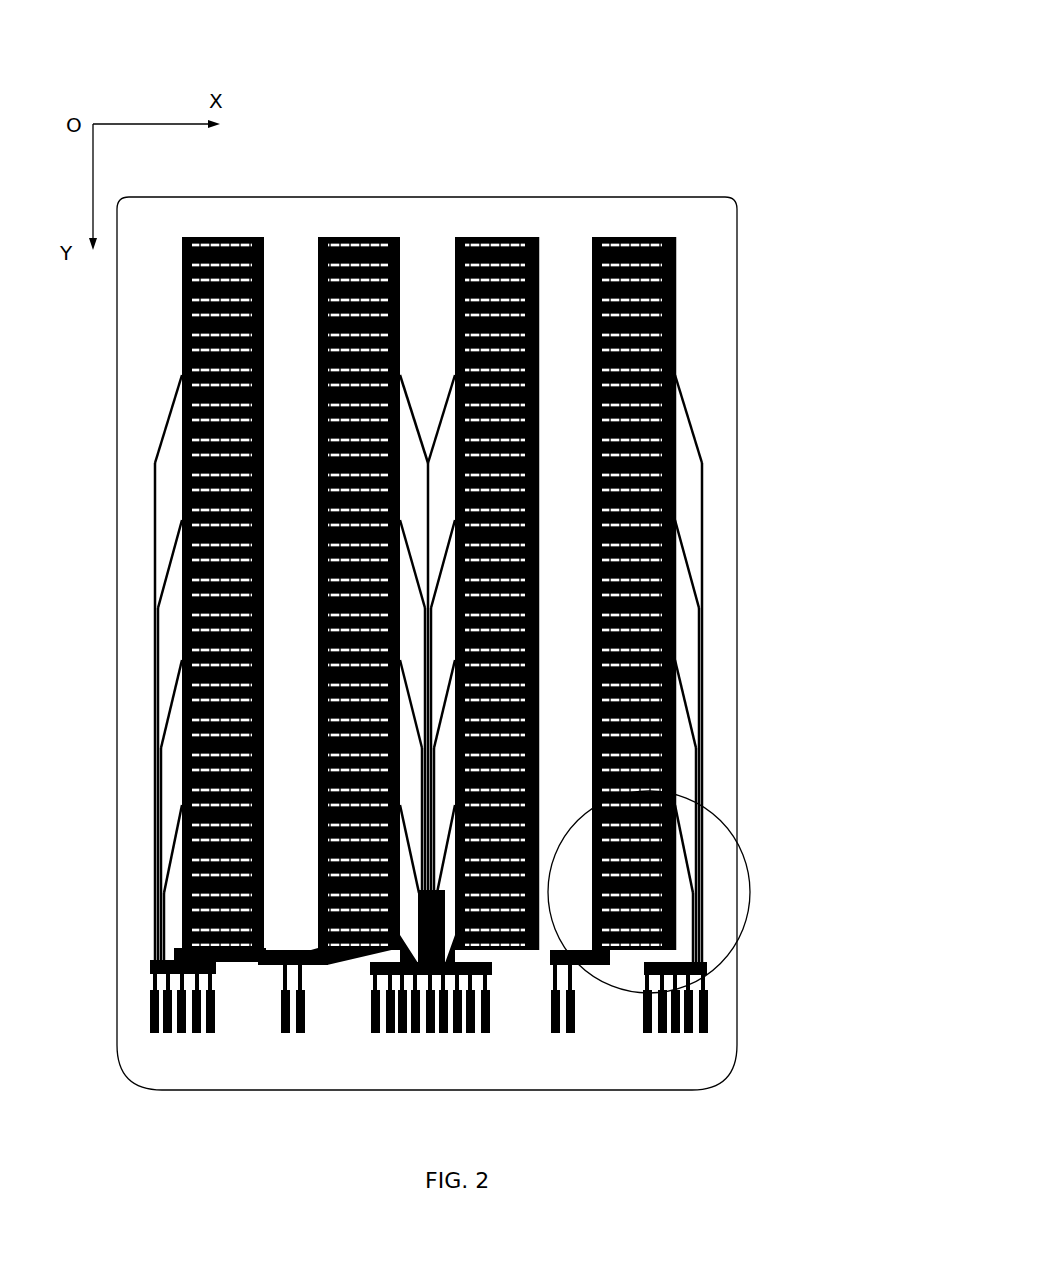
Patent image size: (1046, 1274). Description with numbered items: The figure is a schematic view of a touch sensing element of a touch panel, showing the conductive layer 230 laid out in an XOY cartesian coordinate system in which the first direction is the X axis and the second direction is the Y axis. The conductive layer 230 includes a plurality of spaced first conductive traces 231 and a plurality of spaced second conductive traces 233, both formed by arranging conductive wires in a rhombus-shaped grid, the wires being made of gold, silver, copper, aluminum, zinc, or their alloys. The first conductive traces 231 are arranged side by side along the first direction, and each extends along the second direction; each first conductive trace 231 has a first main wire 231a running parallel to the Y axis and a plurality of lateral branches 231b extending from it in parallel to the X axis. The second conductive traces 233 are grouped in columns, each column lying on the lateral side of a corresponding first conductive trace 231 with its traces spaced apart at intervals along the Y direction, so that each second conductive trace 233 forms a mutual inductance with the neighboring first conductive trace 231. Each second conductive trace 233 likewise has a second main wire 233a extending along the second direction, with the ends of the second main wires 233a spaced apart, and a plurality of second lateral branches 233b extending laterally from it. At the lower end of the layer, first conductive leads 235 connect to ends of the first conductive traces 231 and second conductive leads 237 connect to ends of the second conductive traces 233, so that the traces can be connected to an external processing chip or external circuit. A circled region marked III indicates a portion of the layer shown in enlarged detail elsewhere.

The conductive layer 230 is at (412, 80).
The first conductive trace 231 is at (670, 136).
The first main wire 231a is at (538, 270).
The lateral branch 231b is at (492, 237).
The second conductive trace 233 is at (806, 228).
The second main wire 233a is at (676, 332).
The second lateral branch 233b is at (676, 262).
The first conductive lead 235 is at (527, 958).
The second conductive lead 237 is at (692, 428).
The enlarged region shown in FIG. 3 III is at (733, 834).